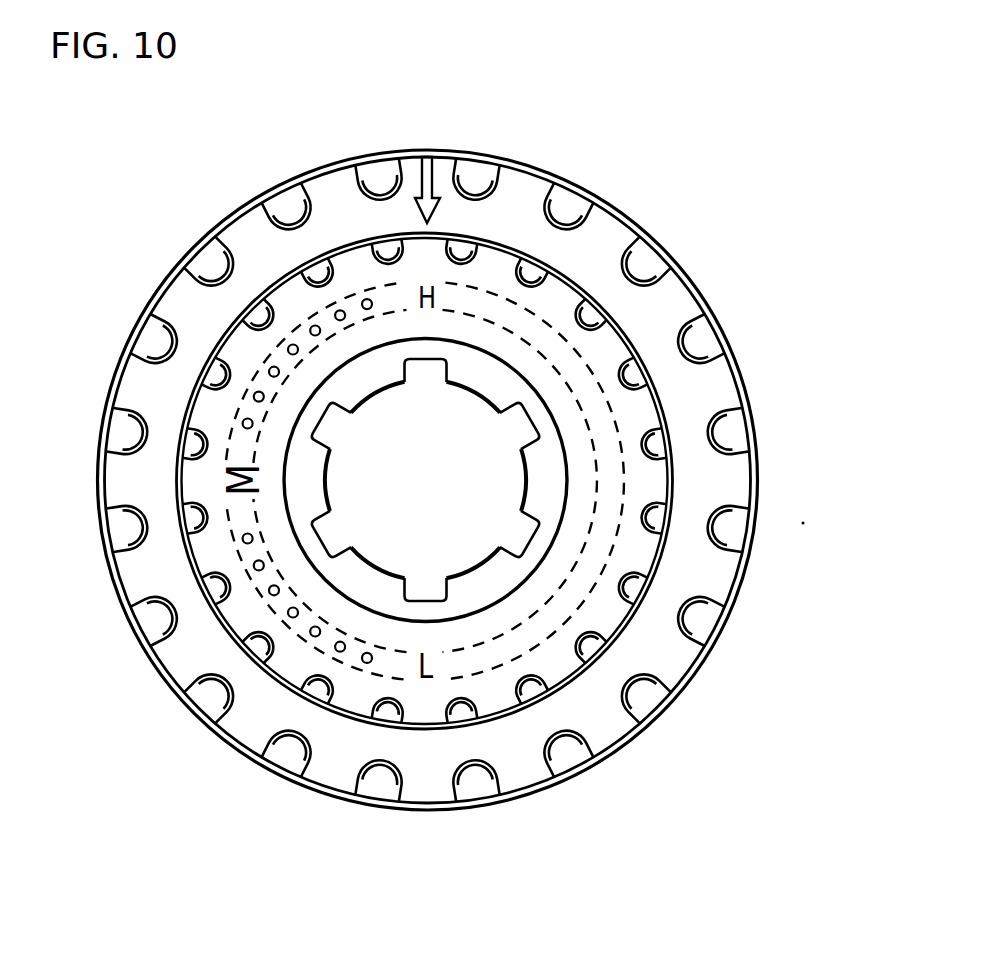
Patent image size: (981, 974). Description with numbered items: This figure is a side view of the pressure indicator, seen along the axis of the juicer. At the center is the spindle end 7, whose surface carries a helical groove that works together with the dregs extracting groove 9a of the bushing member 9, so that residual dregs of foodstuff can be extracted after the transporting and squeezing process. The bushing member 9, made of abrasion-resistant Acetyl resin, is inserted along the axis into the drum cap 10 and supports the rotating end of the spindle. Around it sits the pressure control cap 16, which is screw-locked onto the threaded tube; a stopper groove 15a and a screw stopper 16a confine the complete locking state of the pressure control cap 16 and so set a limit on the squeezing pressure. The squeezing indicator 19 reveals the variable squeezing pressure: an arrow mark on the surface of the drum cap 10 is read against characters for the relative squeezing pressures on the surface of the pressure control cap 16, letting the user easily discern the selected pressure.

The spindle end 7 is at (423, 582).
The bushing member 9 is at (311, 564).
The dregs extracting groove 9a is at (332, 532).
The drum cap 10 is at (677, 264).
The stopper groove 15a is at (596, 445).
The pressure control cap 16 is at (492, 480).
The screw stopper 16a is at (596, 445).
The squeezing indicator 19 is at (442, 297).